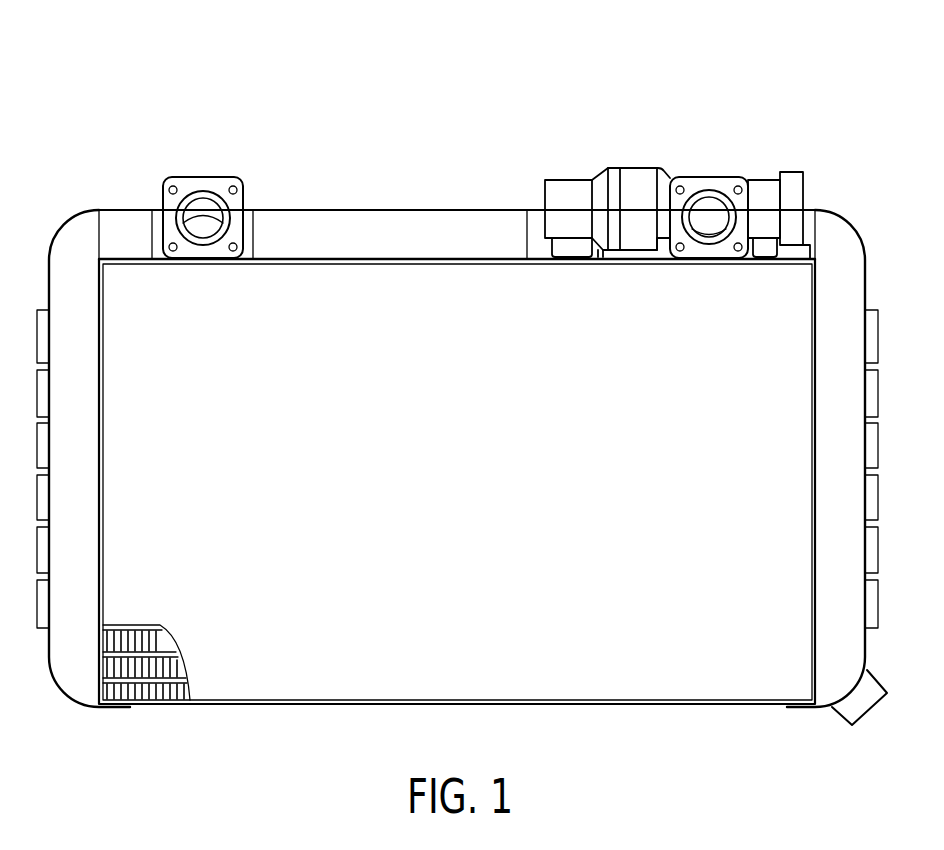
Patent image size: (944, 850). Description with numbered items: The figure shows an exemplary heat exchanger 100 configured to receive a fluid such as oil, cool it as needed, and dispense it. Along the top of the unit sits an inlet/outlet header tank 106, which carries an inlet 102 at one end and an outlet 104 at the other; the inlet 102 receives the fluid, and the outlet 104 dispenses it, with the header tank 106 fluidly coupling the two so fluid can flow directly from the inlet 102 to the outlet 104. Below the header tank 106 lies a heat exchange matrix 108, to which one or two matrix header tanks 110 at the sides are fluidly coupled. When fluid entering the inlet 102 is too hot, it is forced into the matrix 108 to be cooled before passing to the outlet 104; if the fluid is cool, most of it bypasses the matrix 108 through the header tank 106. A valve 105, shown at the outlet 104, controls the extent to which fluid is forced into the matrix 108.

The heat exchanger 100 is at (131, 67).
The inlet 102 is at (203, 203).
The outlet 104 is at (708, 204).
The valve 105 is at (637, 180).
The inlet/outlet header tank 106 is at (302, 222).
The heat exchange matrix 108 is at (447, 317).
The matrix header tank 110 is at (72, 232).